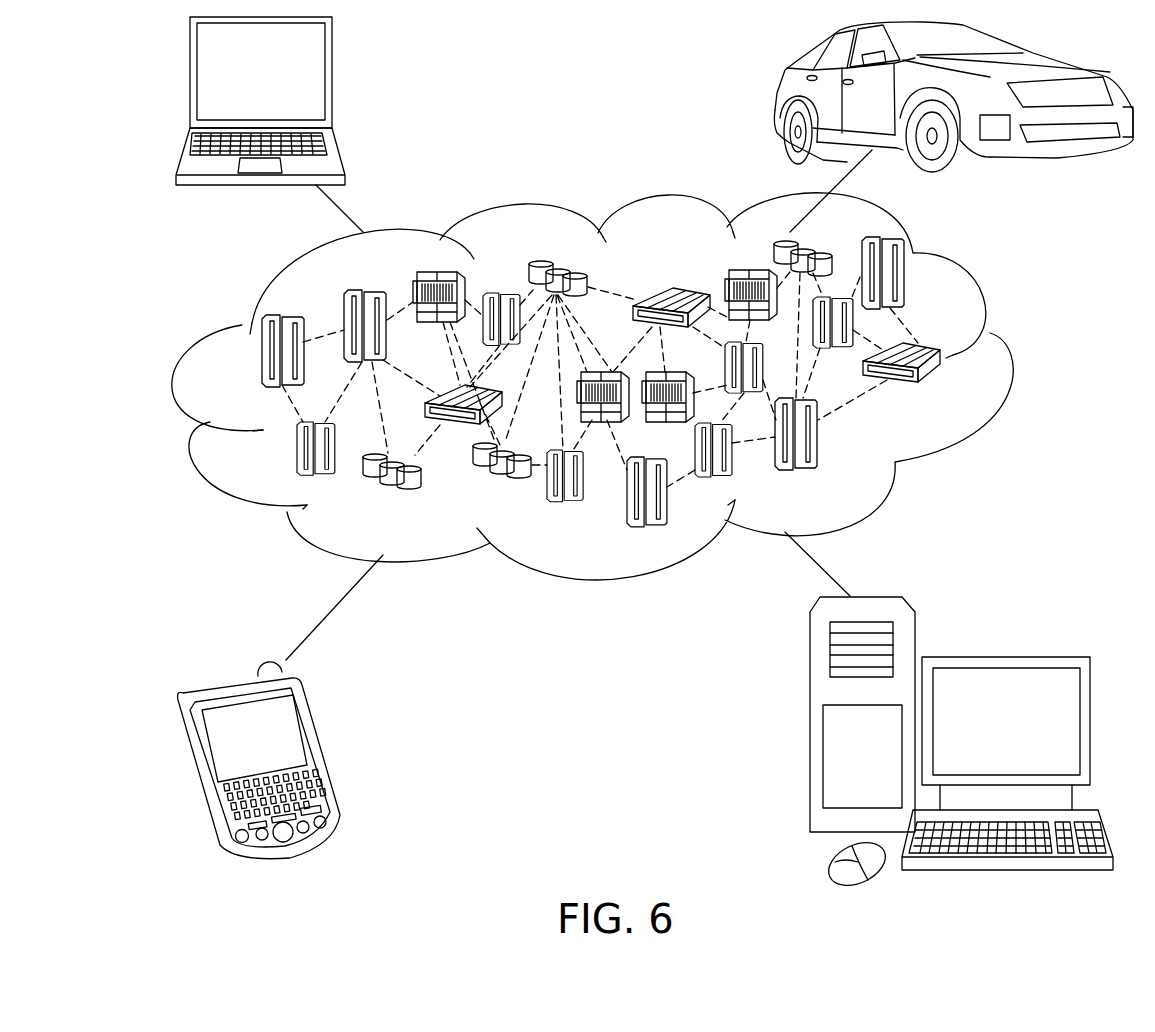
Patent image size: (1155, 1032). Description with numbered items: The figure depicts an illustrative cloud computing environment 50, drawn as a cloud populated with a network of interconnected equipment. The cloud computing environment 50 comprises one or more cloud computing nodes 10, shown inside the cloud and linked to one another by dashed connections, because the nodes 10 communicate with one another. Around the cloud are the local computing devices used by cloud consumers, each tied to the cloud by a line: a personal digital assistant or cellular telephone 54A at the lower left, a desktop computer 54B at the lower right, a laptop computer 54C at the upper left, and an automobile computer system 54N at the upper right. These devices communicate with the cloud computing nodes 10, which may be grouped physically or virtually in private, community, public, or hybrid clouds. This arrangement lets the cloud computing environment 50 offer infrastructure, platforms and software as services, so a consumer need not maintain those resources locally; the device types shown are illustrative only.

The cloud computing node 10 is at (952, 393).
The cloud computing environment 50 is at (1008, 356).
The personal digital assistant or cellular telephone 54A is at (322, 751).
The desktop computer 54B is at (1003, 655).
The laptop computer 54C is at (333, 80).
The automobile computer system 54N is at (781, 93).